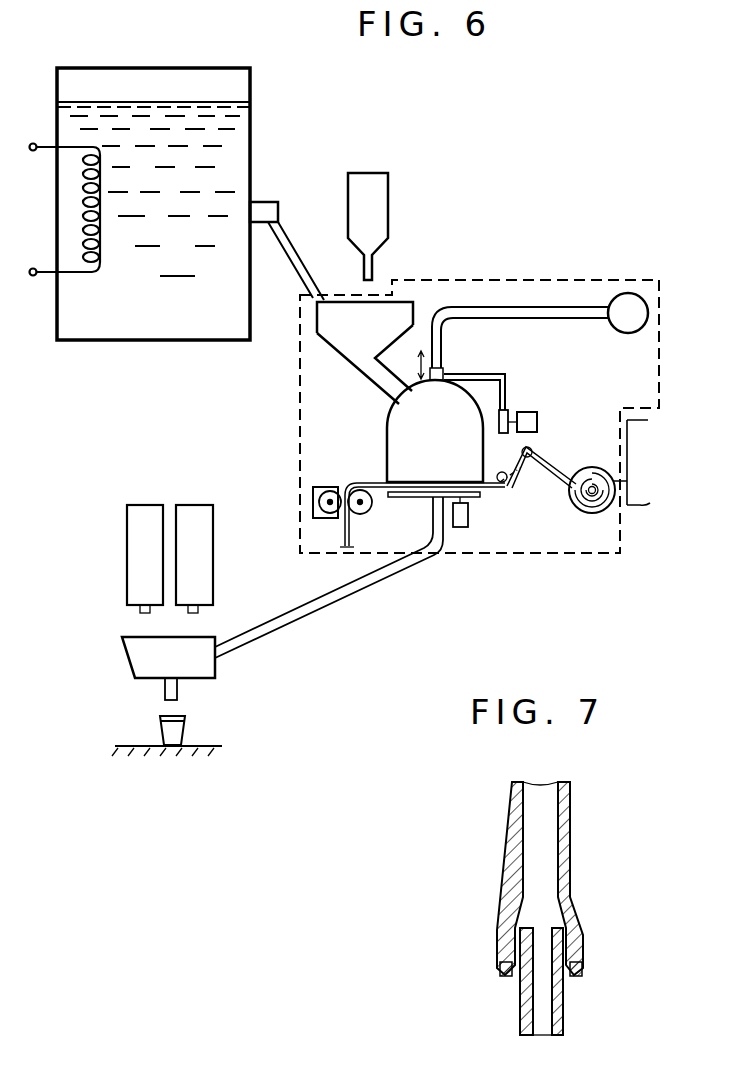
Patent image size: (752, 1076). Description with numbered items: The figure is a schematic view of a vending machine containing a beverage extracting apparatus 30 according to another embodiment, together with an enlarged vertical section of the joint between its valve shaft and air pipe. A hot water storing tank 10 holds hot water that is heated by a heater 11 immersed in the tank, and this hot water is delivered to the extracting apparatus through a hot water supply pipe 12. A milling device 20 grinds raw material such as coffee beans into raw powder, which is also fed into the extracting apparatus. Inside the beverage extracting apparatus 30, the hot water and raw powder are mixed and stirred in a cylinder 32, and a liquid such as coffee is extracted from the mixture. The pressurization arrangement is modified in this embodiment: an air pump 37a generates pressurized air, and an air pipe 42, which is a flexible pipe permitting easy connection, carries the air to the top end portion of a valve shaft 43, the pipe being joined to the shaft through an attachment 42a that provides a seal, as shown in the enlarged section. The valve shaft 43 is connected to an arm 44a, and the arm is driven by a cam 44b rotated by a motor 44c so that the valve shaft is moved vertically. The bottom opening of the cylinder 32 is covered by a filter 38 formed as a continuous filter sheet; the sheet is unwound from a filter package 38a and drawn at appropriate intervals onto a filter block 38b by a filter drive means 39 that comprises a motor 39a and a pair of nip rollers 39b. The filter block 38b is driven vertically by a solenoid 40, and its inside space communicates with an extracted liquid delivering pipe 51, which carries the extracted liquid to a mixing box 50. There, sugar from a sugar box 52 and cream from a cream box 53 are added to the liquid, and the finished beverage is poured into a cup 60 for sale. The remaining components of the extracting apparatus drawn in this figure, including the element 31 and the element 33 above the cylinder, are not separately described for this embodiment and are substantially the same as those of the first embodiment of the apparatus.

In FIG. 6, the hot water storing tank 10 is at (155, 68).
In FIG. 6, the heater 11 is at (100, 272).
In FIG. 6, the hot water supply pipe 12 is at (298, 250).
In FIG. 6, the milling device 20 is at (369, 173).
In FIG. 6, the beverage extracting apparatus 30 is at (628, 277).
In FIG. 6, the funnel 31 is at (349, 357).
In FIG. 6, the cylinder 32 is at (387, 436).
In FIG. 6, the chute 33 is at (382, 388).
In FIG. 6, the air pump 37a is at (623, 333).
In FIG. 6, the filter 38 is at (534, 468).
In FIG. 6, the filter package 38a is at (590, 513).
In FIG. 6, the filter block 38b is at (481, 490).
In FIG. 6, the filter drive means 39 is at (305, 504).
In FIG. 6, the motor 39a is at (328, 487).
In FIG. 6, the nip rollers 39b is at (372, 511).
In FIG. 6, the solenoid 40 is at (460, 527).
In FIG. 6, the air pipe 42 is at (557, 318).
In FIG. 7, the air pipe 42 is at (571, 860).
In FIG. 7, the attachment 42a is at (583, 970).
In FIG. 6, the valve shaft 43 is at (431, 362).
In FIG. 7, the valve shaft 43 is at (522, 1006).
In FIG. 6, the arm 44a is at (477, 374).
In FIG. 6, the cam 44b is at (510, 411).
In FIG. 6, the motor 44c is at (538, 422).
In FIG. 6, the mixing box 50 is at (215, 672).
In FIG. 6, the extracted liquid delivering pipe 51 is at (365, 586).
In FIG. 6, the sugar box 52 is at (142, 505).
In FIG. 6, the cream box 53 is at (197, 505).
In FIG. 6, the cup 60 is at (186, 722).